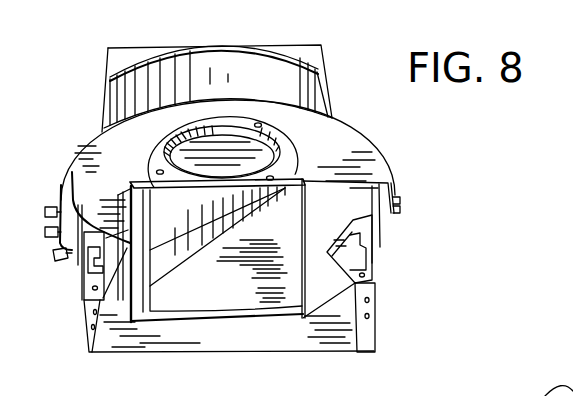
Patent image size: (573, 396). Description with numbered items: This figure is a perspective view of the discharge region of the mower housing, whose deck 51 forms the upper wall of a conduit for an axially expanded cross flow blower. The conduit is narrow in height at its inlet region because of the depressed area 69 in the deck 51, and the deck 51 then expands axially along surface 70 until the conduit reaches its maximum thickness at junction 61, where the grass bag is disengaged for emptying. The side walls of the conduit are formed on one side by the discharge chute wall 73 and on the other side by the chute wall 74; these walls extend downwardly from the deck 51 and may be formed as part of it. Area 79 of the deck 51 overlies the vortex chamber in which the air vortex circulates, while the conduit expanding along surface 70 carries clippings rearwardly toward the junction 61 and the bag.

The deck 51 is at (270, 50).
The junction 61 is at (302, 270).
The depressed area 69 is at (84, 143).
The surface 70 is at (346, 158).
The discharge chute wall 73 is at (345, 210).
The chute wall 74 is at (130, 198).
The area 79 is at (125, 181).